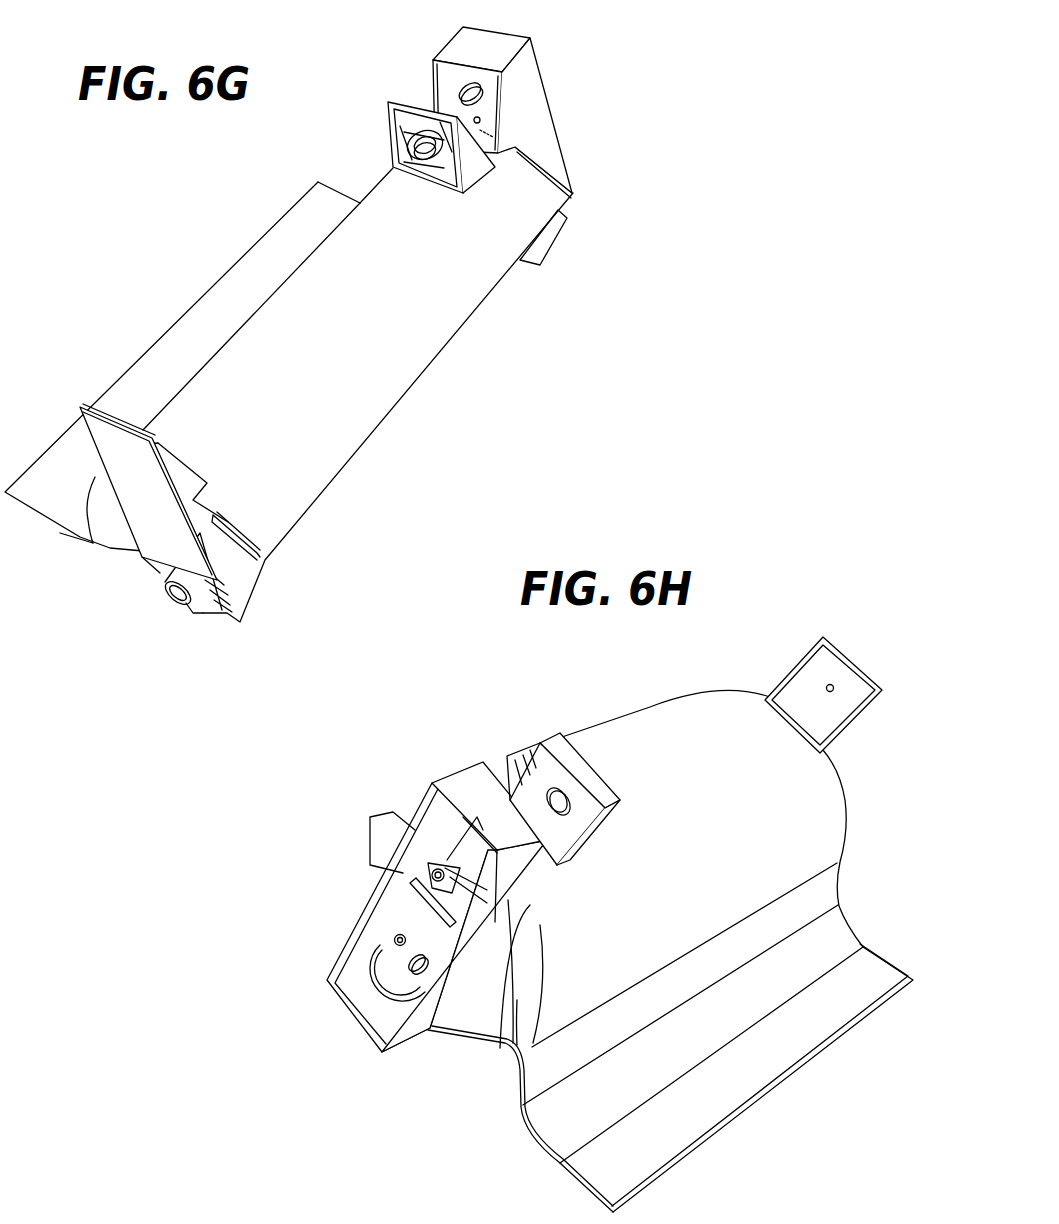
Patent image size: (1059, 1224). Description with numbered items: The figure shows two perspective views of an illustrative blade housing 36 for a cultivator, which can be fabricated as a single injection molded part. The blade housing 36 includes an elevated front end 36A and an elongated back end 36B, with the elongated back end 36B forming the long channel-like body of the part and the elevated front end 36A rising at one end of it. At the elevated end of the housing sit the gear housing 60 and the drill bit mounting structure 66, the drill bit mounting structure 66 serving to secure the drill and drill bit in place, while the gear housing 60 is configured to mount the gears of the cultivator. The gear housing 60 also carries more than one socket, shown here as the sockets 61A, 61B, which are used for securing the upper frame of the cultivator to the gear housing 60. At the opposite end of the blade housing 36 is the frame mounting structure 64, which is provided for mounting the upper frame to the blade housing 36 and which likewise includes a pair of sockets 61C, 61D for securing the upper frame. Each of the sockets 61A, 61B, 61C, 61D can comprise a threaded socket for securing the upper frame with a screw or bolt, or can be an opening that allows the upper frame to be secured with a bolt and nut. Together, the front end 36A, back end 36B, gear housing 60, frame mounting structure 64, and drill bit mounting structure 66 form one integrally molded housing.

In FIG. 6G, the blade housing 36 is at (289, 384).
In FIG. 6H, the blade housing 36 is at (661, 925).
In FIG. 6G, the elevated front end 36A is at (455, 335).
In FIG. 6G, the elongated back end 36B is at (160, 338).
In FIG. 6H, the elongated back end 36B is at (758, 1092).
In FIG. 6G, the gear housing 60 is at (548, 105).
In FIG. 6H, the gear housing 60 is at (406, 902).
In FIG. 6H, the socket 61A is at (430, 870).
In FIG. 6H, the socket 61B is at (392, 935).
In FIG. 6G, the socket 61C is at (148, 446).
In FIG. 6G, the socket 61D is at (170, 540).
In FIG. 6G, the frame mounting structure 64 is at (90, 424).
In FIG. 6H, the frame mounting structure 64 is at (845, 672).
In FIG. 6G, the drill bit mounting structure 66 is at (388, 118).
In FIG. 6H, the drill bit mounting structure 66 is at (538, 750).